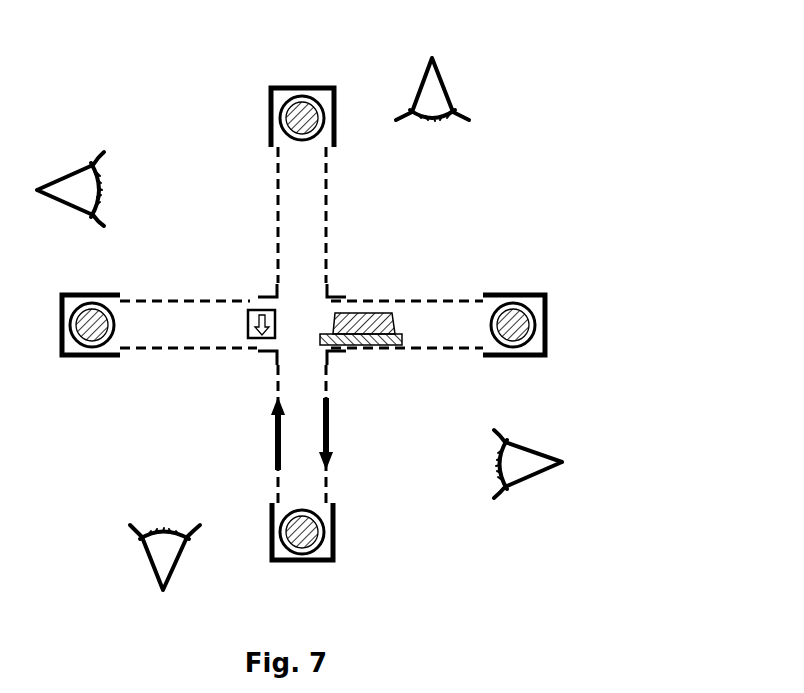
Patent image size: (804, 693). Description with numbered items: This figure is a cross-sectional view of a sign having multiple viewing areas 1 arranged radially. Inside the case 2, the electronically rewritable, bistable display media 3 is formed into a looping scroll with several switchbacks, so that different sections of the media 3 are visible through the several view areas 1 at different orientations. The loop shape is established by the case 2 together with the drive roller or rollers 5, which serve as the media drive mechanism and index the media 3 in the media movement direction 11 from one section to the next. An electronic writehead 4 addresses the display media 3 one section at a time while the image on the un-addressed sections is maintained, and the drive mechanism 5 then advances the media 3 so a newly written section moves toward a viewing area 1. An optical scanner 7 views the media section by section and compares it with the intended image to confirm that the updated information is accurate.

The viewing area 1 is at (322, 187).
The case 2 is at (333, 558).
The display media 3 is at (326, 250).
The electronic writehead 4 is at (367, 337).
The media drive mechanism 5 is at (280, 517).
The optical scanner 7 is at (247, 311).
The media movement direction 11 is at (328, 425).